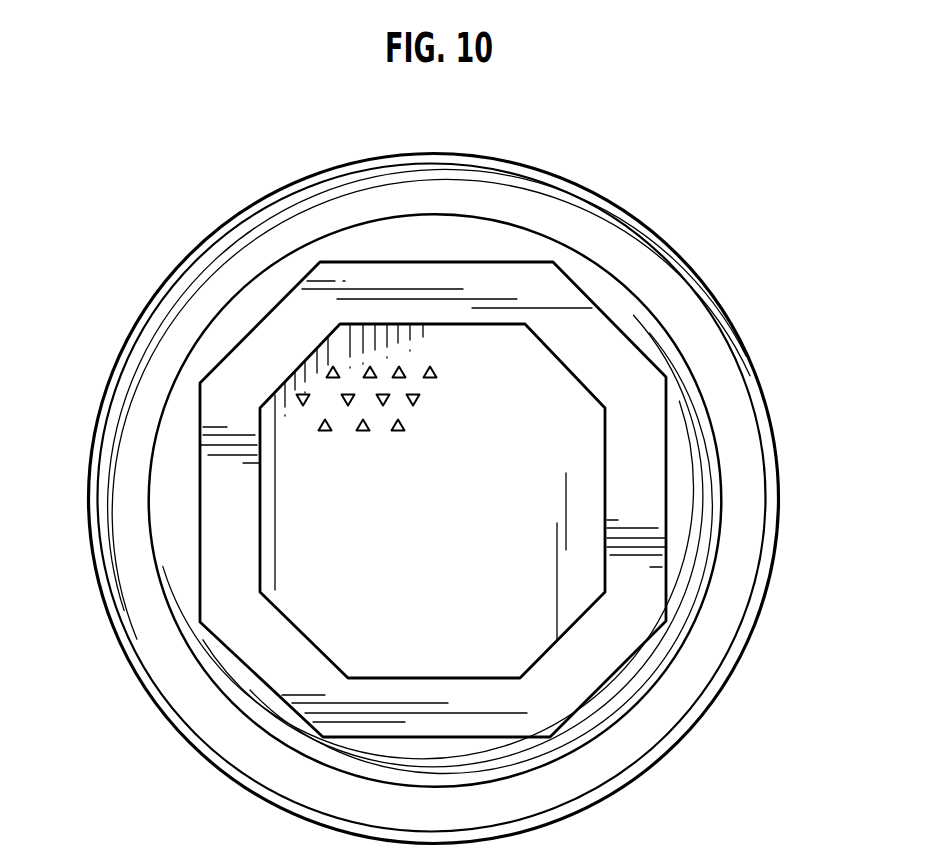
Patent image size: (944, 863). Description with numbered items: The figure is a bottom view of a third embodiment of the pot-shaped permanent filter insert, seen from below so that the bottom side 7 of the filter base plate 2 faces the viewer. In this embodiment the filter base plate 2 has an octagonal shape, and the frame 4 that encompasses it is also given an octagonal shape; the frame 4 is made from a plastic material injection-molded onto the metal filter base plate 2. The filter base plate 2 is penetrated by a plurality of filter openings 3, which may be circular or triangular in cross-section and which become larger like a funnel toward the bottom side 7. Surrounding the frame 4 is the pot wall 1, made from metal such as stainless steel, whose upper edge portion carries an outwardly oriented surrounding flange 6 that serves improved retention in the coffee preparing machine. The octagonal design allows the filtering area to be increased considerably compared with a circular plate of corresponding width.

The pot wall 1 is at (454, 499).
The filter base plate 2 is at (435, 516).
The filter openings 3 is at (397, 434).
The annular frame 4 is at (487, 507).
The surrounding flange 6 is at (429, 386).
The bottom side 7 is at (342, 529).